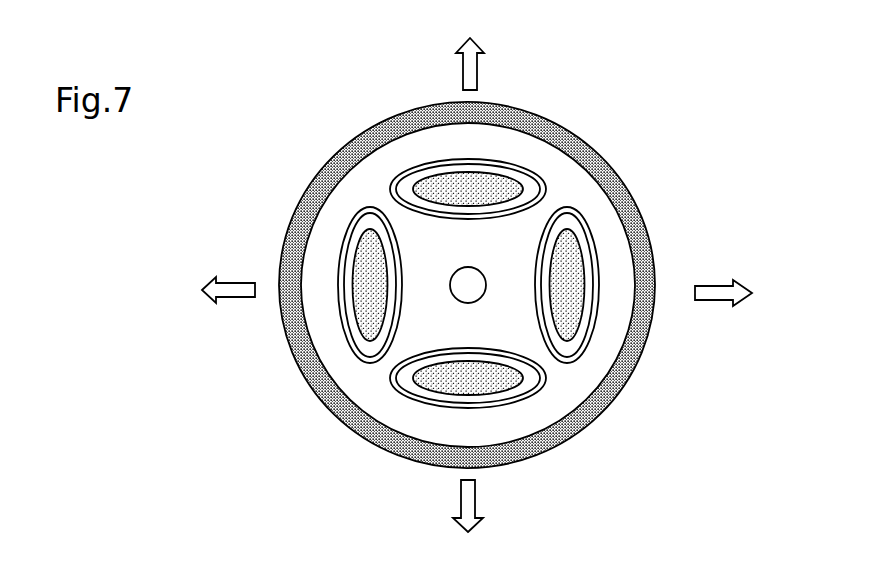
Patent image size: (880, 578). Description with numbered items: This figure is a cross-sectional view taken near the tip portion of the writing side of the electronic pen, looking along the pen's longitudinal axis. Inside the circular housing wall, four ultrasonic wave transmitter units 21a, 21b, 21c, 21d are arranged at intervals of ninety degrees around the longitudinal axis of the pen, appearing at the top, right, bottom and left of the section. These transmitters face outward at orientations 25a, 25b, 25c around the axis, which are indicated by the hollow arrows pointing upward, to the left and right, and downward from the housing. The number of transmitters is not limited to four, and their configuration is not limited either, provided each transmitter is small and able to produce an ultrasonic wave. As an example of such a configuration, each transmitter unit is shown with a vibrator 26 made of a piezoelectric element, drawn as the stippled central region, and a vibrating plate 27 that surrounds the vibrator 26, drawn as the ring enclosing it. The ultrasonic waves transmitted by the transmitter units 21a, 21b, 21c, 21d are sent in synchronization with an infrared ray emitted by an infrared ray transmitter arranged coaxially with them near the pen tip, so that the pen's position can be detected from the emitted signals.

The ultrasonic wave transmitter unit 21a is at (458, 133).
The ultrasonic wave transmitter unit 21b is at (608, 255).
The ultrasonic wave transmitter unit 21c is at (519, 413).
The ultrasonic wave transmitter unit 21d is at (333, 333).
The orientation 25a is at (466, 50).
The orientation 25b is at (477, 291).
The orientation 25c is at (468, 521).
The vibrator 26 is at (516, 181).
The vibrating plate 27 is at (397, 184).